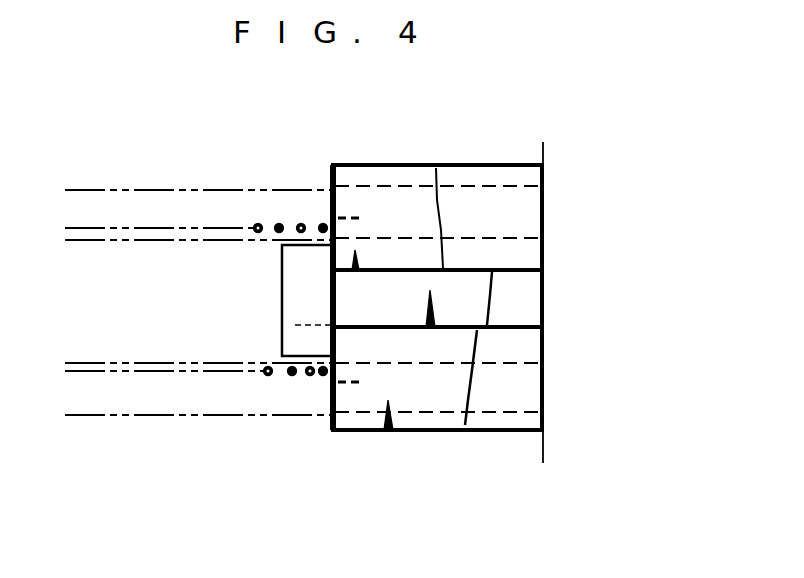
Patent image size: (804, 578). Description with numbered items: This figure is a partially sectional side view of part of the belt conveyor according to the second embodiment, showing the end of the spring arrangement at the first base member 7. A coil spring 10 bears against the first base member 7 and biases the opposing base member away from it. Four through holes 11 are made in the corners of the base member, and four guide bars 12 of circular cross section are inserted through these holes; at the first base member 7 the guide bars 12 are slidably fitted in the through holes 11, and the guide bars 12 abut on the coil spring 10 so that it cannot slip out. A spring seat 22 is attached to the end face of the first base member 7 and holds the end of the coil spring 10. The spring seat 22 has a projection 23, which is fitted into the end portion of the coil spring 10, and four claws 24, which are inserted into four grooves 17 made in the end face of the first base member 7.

The first base member 7 is at (363, 430).
The coil spring 10 is at (279, 224).
The through holes 11 is at (400, 186).
The guide bars 12 is at (178, 190).
The grooves 17 is at (530, 302).
The spring seat 22 is at (326, 381).
The projection 23 is at (282, 304).
The claws 24 is at (364, 218).